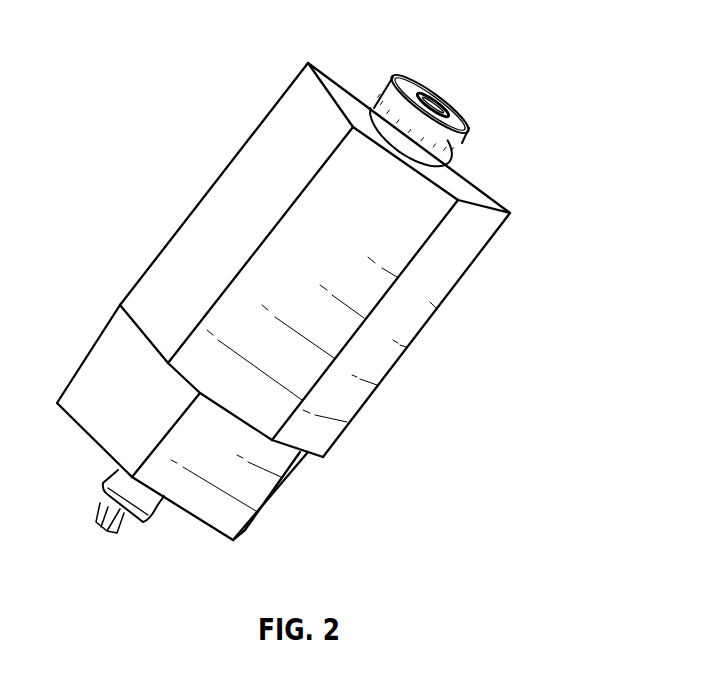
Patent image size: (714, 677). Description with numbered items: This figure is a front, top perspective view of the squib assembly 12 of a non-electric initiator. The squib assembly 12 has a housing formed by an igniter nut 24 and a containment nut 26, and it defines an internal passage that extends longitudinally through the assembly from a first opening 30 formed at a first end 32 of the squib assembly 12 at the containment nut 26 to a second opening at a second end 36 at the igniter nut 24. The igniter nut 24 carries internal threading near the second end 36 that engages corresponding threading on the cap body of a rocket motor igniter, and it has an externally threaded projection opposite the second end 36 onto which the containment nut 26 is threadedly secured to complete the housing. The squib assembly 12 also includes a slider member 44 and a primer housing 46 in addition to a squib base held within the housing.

The squib assembly 12 is at (125, 107).
The igniter nut 24 is at (91, 355).
The containment nut 26 is at (468, 280).
The first opening 30 is at (375, 93).
The first end 32 is at (497, 201).
The second end 36 is at (92, 443).
The slider member 44 is at (160, 510).
The primer housing 46 is at (462, 145).